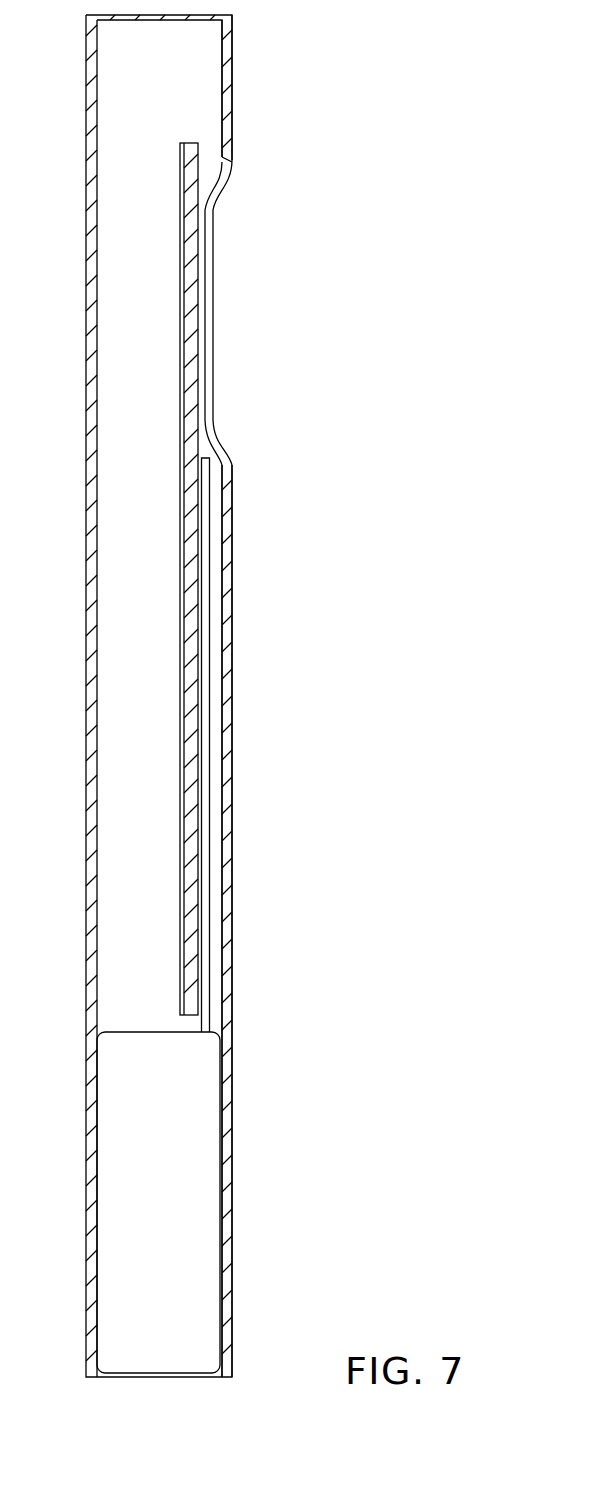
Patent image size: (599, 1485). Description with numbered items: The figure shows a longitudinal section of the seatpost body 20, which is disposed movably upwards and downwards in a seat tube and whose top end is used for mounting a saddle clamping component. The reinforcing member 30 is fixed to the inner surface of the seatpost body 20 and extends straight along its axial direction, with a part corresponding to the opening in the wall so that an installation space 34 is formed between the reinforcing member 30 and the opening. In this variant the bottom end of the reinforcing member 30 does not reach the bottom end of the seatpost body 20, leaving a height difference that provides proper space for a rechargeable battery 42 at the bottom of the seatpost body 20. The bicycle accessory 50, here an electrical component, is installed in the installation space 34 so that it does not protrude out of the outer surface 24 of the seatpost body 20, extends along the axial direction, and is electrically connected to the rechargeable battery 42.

The seatpost body 20 is at (262, 113).
The outer surface 24 is at (232, 680).
The reinforcing member 30 is at (190, 520).
The installation space 34 is at (217, 732).
The rechargeable battery 42 is at (183, 1155).
The bicycle accessory 50 is at (207, 483).